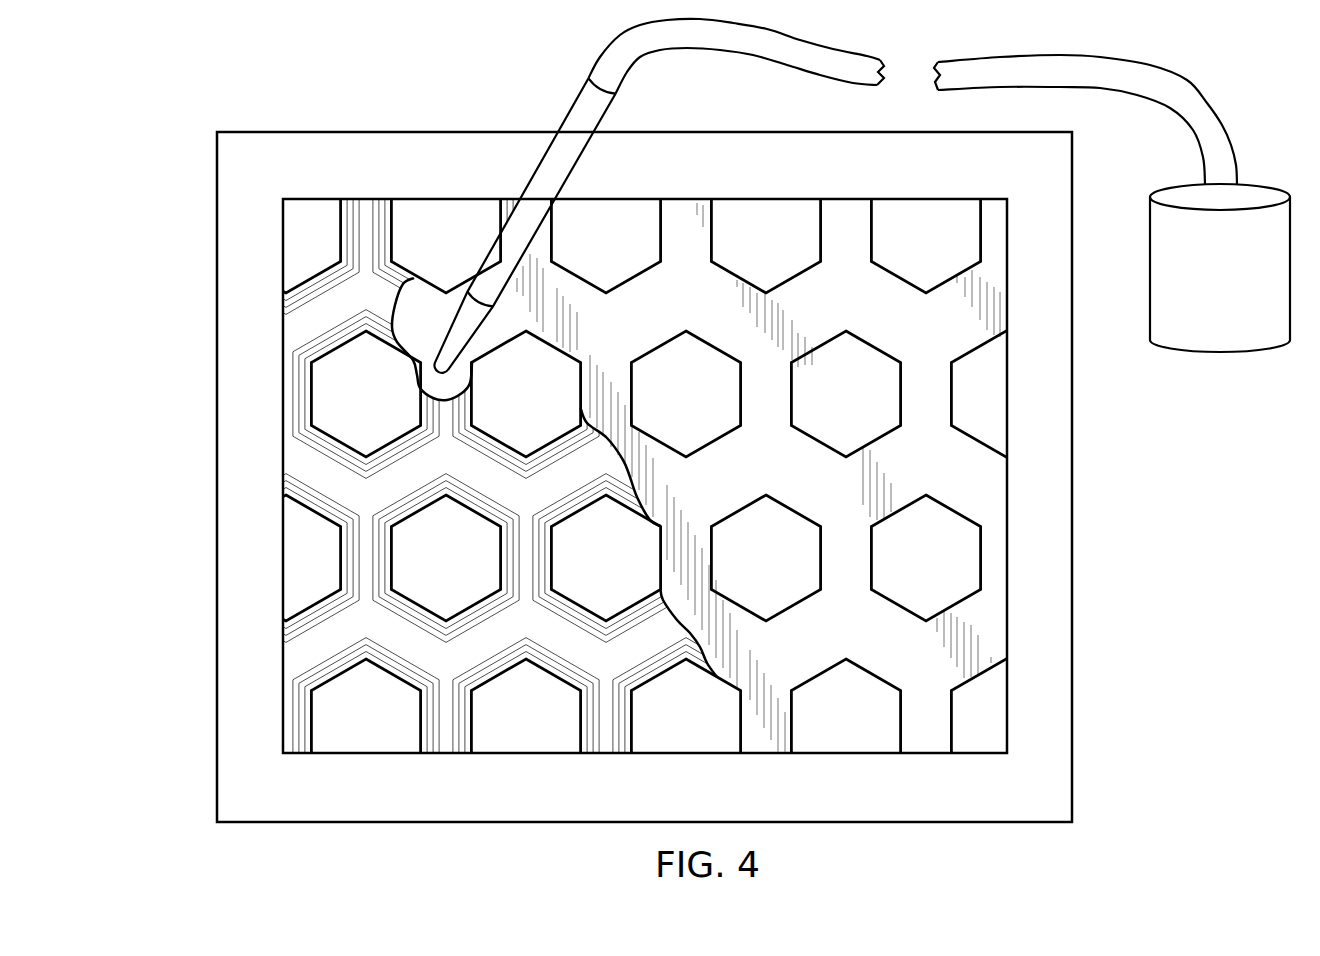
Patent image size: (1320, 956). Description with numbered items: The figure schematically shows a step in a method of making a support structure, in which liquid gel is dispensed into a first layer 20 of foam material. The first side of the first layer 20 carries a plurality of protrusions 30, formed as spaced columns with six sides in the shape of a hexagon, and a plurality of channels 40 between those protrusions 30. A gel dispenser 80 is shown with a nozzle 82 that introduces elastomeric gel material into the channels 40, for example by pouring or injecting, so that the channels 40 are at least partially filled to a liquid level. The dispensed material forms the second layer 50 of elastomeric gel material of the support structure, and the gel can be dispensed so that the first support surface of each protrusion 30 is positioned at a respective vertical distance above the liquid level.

The first layer of foam material 20 is at (600, 477).
The protrusions 30 is at (322, 373).
The channels 40 is at (313, 457).
The second layer of elastomeric gel material 50 is at (843, 213).
The gel dispenser 80 is at (873, 196).
The nozzle 82 is at (463, 302).